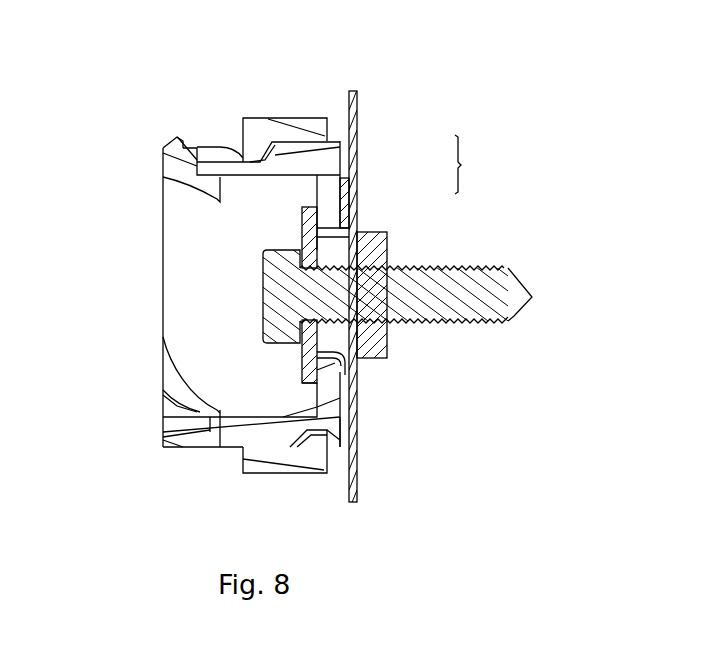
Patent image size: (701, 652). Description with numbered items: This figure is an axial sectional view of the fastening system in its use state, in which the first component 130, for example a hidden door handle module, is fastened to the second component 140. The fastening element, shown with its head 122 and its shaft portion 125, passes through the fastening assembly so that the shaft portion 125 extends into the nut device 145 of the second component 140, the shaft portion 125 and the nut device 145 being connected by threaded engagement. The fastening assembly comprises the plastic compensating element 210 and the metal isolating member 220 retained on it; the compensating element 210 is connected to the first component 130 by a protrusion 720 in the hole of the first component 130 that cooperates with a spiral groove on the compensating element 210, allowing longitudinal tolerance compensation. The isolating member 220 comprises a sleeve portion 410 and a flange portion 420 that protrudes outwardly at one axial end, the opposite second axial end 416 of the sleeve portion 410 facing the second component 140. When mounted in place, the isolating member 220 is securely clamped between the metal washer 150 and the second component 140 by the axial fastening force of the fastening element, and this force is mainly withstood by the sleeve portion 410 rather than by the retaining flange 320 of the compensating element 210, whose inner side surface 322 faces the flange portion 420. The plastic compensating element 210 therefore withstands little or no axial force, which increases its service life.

The head 122 is at (263, 293).
The shaft portion 125 is at (452, 290).
The first component 130 is at (302, 138).
The second component 140 is at (353, 152).
The nut device 145 is at (378, 352).
The metal washer 150 is at (312, 228).
The compensating element 210 is at (207, 150).
The isolating member 220 is at (482, 164).
The retaining flange 320 is at (333, 390).
The inner side surface 322 is at (300, 423).
The sleeve portion 410 is at (340, 197).
The second axial end 416 is at (312, 367).
The flange portion 420 is at (353, 233).
The protrusion 720 is at (250, 156).